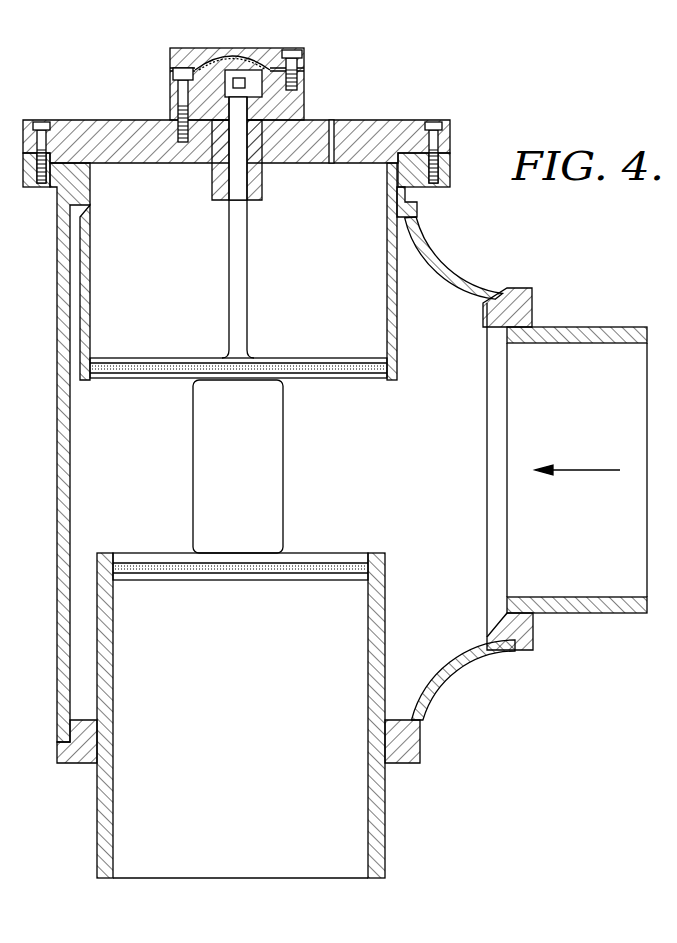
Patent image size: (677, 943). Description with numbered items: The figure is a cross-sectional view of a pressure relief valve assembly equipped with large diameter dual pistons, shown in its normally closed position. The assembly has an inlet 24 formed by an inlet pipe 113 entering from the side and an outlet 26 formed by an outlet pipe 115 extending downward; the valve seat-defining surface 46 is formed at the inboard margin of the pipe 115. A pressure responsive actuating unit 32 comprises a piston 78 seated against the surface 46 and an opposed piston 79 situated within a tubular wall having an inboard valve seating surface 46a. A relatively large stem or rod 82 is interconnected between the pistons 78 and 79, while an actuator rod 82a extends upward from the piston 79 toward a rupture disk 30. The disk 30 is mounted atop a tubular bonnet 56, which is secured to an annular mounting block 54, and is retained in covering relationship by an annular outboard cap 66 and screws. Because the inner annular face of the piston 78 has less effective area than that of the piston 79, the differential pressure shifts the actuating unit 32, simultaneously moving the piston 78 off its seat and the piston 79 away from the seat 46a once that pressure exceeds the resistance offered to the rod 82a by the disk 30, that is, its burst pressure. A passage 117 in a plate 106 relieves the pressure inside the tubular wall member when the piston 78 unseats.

The inlet 24 is at (566, 470).
The outlet 26 is at (248, 692).
The rupture disk 30 is at (250, 50).
The pressure responsive actuating unit 32 is at (330, 465).
The inner surface 46 is at (224, 715).
The inboard valve seating surface 46a is at (390, 366).
The annular mounting block 54 is at (447, 163).
The bonnet 56 is at (230, 84).
The outboard cap 66 is at (171, 53).
The piston 78 is at (325, 557).
The piston 79 is at (137, 360).
The stem or rod 82 is at (203, 465).
The actuator rod 82a is at (241, 298).
The plate 106 is at (393, 123).
The inlet pipe 113 is at (604, 613).
The outlet pipe 115 is at (96, 826).
The passage 117 is at (332, 163).